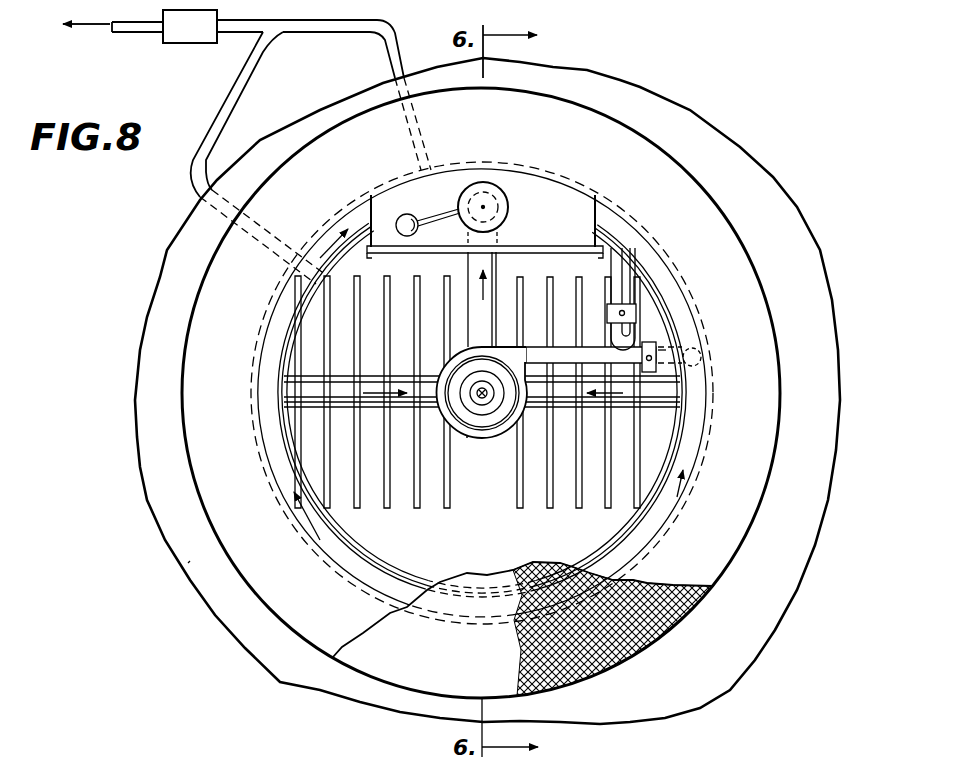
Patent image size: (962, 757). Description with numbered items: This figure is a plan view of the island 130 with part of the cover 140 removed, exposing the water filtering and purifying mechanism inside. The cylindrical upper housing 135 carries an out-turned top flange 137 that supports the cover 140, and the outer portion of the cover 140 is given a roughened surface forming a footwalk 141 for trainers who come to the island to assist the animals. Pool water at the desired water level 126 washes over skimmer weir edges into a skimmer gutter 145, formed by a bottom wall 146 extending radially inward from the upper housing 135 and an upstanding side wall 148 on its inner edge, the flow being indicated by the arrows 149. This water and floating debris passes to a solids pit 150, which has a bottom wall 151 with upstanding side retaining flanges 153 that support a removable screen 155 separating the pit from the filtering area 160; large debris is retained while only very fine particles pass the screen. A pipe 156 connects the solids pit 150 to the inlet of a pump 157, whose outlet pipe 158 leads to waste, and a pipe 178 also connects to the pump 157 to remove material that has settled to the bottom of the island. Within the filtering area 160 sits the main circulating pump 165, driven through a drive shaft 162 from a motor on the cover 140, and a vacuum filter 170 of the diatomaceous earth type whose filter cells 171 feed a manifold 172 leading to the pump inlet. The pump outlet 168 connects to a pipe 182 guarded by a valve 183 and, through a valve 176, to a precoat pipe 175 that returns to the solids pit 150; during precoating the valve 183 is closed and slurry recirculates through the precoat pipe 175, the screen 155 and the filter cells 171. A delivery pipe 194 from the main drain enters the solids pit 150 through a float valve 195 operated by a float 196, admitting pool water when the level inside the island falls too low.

The water level 126 is at (190, 561).
The island 130 is at (183, 278).
The upper housing 135 is at (263, 462).
The top flange 137 is at (203, 408).
The cover 140 is at (408, 654).
The footwalk 141 is at (613, 662).
The skimmer gutter 145 is at (679, 307).
The bottom wall 146 is at (668, 352).
The side wall 148 is at (684, 428).
The arrows 149 is at (325, 240).
The solids pit 150 is at (408, 193).
The bottom wall 151 is at (547, 193).
The upstanding side retaining flanges 153 is at (377, 254).
The removable screen 155 is at (548, 246).
The pipe 156 is at (397, 62).
The pump 157 is at (200, 43).
The pipe 158 is at (144, 33).
The filtering area 160 is at (400, 538).
The drive shaft 162 is at (487, 396).
The main circulating pump 165 is at (467, 441).
The outlet 168 is at (512, 347).
The vacuum filter 170 is at (316, 354).
The filter cells 171 is at (300, 382).
The manifold 172 is at (318, 412).
The precoat pipe 175 is at (640, 245).
The valve 176 is at (636, 313).
The pipe 178 is at (262, 75).
The pipe 182 is at (701, 352).
The valve 183 is at (657, 343).
The delivery pipe 194 is at (495, 263).
The float valve 195 is at (485, 182).
The float 196 is at (399, 216).